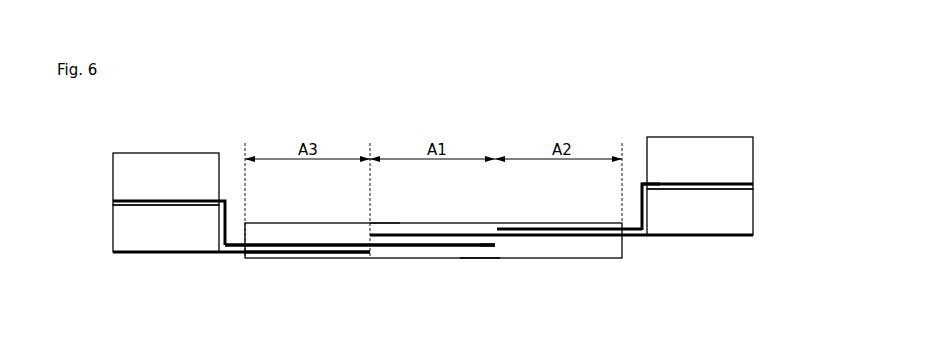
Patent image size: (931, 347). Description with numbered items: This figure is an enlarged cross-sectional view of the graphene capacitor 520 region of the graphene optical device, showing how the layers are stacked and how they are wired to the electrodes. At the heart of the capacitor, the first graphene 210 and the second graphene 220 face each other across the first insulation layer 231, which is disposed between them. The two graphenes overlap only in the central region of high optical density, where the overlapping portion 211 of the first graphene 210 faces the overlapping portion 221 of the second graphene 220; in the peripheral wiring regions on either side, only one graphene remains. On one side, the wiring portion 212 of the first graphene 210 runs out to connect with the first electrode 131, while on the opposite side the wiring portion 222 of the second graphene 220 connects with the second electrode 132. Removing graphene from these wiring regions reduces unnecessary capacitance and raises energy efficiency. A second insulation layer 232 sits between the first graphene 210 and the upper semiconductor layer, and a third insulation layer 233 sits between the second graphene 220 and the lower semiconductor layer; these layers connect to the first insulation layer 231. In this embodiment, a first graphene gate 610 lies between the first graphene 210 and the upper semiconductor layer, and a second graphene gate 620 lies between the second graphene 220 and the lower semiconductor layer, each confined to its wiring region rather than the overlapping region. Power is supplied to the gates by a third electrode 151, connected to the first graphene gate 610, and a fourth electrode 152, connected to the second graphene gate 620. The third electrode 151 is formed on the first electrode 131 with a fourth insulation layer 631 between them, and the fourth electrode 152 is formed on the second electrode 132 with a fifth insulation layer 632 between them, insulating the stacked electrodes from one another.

The second electrode 132 is at (128, 181).
The fourth electrode 152 is at (128, 231).
The fifth insulation layer 632 is at (115, 204).
The second graphene gate 620 is at (173, 253).
The second graphene 220 is at (460, 247).
The wiring portion of the second graphene 222 is at (287, 243).
The overlapping portion of the second graphene 221 is at (405, 247).
The first insulation layer 231 is at (492, 243).
The third insulation layer 233 is at (480, 254).
The second insulation layer 232 is at (385, 230).
The graphene capacitor 520 is at (623, 250).
The overlapping portion of the first graphene 211 is at (423, 233).
The wiring portion of the first graphene 212 is at (576, 236).
The first graphene 210 is at (601, 235).
The first graphene gate 610 is at (640, 183).
The fourth insulation layer 631 is at (752, 185).
The third electrode 151 is at (738, 150).
The first electrode 131 is at (738, 209).